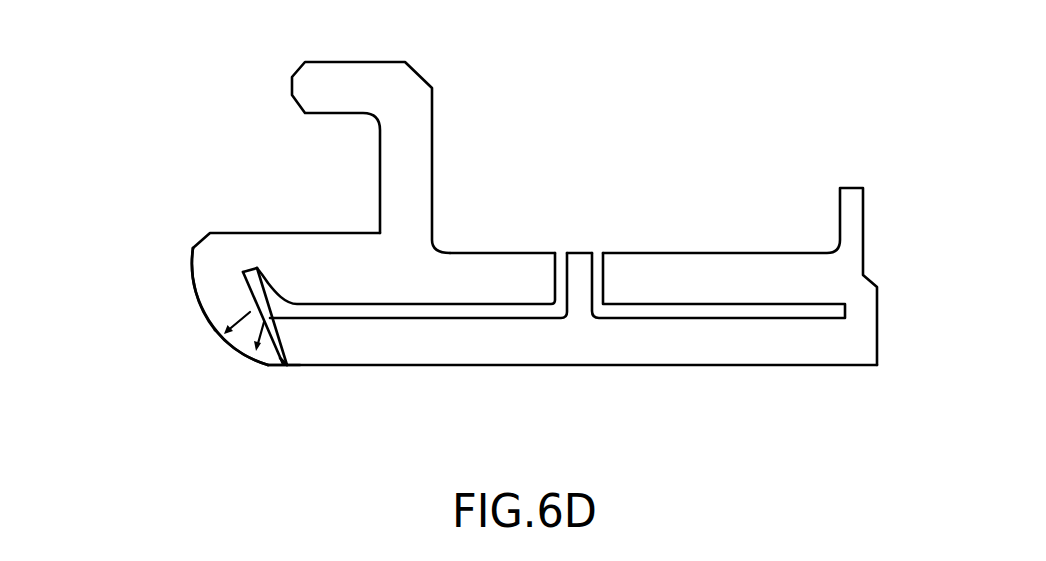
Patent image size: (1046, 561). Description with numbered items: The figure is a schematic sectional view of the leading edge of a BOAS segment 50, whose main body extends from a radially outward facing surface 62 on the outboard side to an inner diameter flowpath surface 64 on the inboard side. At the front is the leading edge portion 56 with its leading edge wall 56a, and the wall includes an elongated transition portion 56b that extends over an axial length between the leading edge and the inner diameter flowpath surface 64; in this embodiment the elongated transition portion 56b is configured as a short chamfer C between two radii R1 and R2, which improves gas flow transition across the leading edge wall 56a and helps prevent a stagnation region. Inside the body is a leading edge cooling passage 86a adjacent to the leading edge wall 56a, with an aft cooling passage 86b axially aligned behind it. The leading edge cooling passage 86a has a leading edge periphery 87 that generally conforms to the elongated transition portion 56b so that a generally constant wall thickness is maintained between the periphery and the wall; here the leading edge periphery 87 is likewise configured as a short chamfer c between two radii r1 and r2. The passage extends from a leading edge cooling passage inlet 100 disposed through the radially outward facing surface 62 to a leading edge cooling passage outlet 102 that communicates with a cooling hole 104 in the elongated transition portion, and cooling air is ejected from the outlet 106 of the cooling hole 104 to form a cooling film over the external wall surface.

The BOAS segment 50 is at (697, 87).
The radially outward facing surface 62 is at (708, 253).
The inner diameter flowpath surface 64 is at (672, 366).
The leading edge cooling passage 86a is at (384, 303).
The aft cooling passage 86b is at (754, 304).
The leading edge cooling passage inlet 100 is at (561, 253).
The leading edge cooling passage outlet 102 is at (270, 305).
The cooling hole 104 is at (255, 315).
The outlet 106 is at (287, 364).
The leading edge portion 56 is at (200, 304).
The leading edge wall 56a is at (205, 337).
The elongated transition portion 56b is at (256, 364).
The leading edge periphery 87 is at (285, 365).
The radius R1 is at (224, 330).
The radius R2 is at (262, 323).
The short chamfer C is at (248, 350).
The radius r1 is at (270, 276).
The radius r2 is at (298, 296).
The short chamfer c is at (274, 280).